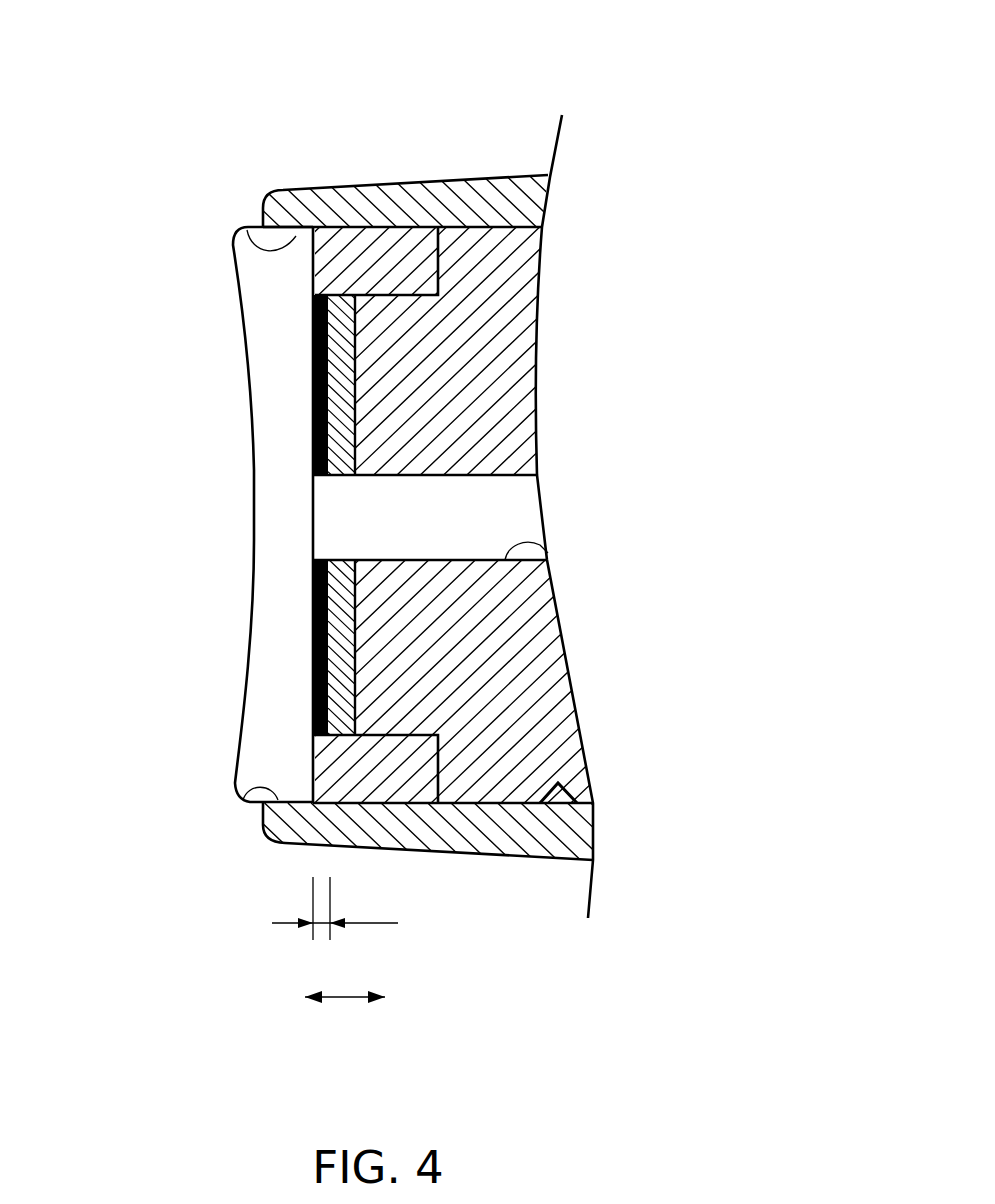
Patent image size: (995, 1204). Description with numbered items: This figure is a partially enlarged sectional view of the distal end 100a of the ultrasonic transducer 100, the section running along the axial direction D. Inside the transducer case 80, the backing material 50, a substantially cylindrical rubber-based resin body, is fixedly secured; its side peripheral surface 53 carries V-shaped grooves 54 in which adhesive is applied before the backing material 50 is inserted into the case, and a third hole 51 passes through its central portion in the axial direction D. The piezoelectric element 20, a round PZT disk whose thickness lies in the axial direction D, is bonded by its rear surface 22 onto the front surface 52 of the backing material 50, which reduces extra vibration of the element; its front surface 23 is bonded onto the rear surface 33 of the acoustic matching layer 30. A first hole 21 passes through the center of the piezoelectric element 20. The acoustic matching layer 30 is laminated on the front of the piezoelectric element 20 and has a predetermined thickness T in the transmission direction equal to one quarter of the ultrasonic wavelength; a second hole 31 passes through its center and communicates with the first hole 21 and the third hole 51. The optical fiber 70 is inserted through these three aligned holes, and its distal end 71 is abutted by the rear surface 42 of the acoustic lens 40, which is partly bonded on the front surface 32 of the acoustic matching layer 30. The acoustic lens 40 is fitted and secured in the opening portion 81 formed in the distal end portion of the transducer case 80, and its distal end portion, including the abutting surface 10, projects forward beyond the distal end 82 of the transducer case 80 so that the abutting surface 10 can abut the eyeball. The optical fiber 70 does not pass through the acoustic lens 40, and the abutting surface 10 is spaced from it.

The ultrasonic transducer 100 is at (40, 33).
The distal end 100a is at (217, 482).
The abutting surface 10 is at (250, 413).
The piezoelectric element 20 is at (343, 387).
The first hole 21 is at (343, 560).
The rear surface 22 is at (357, 400).
The front surface 23 is at (330, 415).
The acoustic matching layer 30 is at (313, 322).
The second hole 31 is at (325, 543).
The front surface 32 is at (313, 350).
The rear surface 33 is at (335, 312).
The acoustic lens 40 is at (280, 518).
The rear surface 42 is at (362, 250).
The backing material 50 is at (482, 332).
The third hole 51 is at (548, 553).
The front surface 52 is at (312, 480).
The side peripheral surface 53 is at (497, 213).
The groove 54 is at (568, 792).
The optical fiber 70 is at (497, 488).
The distal end 71 is at (313, 540).
The transducer case 80 is at (327, 212).
The opening portion 81 is at (245, 230).
The distal end 82 is at (262, 216).
The thickness T is at (335, 908).
The axial direction D is at (342, 1000).